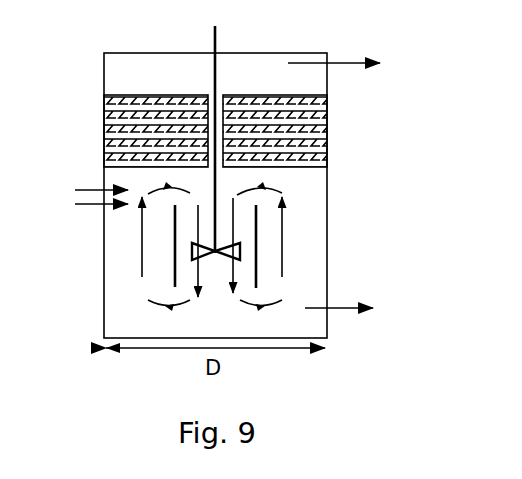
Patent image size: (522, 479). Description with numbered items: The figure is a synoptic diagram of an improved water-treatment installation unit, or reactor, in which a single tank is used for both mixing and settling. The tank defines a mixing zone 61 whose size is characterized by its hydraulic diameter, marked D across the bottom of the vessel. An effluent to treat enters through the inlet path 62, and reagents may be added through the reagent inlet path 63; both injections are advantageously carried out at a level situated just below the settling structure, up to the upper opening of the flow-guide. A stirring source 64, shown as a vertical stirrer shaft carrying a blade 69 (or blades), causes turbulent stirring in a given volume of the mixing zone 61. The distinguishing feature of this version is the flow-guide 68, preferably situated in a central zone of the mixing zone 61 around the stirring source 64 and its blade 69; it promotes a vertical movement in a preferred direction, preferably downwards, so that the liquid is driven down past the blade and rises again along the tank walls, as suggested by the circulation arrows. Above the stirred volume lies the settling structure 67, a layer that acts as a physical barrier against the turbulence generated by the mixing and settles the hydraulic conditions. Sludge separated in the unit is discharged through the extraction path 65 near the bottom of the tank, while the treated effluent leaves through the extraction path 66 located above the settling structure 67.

The mixing zone 61 is at (317, 213).
The inlet path 62 is at (83, 188).
The reagent inlet path 63 is at (83, 207).
The stirring source 64 is at (215, 29).
The extraction path for sludge 65 is at (338, 307).
The extraction path for treated effluent 66 is at (335, 62).
The settling structure 67 is at (327, 121).
The flow-guide 68 is at (175, 280).
The blade 69 is at (216, 260).